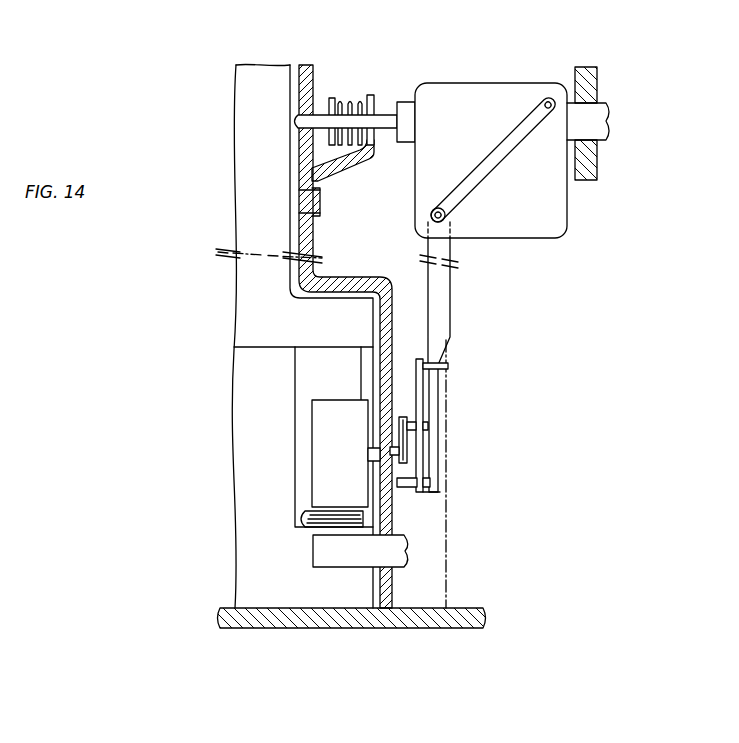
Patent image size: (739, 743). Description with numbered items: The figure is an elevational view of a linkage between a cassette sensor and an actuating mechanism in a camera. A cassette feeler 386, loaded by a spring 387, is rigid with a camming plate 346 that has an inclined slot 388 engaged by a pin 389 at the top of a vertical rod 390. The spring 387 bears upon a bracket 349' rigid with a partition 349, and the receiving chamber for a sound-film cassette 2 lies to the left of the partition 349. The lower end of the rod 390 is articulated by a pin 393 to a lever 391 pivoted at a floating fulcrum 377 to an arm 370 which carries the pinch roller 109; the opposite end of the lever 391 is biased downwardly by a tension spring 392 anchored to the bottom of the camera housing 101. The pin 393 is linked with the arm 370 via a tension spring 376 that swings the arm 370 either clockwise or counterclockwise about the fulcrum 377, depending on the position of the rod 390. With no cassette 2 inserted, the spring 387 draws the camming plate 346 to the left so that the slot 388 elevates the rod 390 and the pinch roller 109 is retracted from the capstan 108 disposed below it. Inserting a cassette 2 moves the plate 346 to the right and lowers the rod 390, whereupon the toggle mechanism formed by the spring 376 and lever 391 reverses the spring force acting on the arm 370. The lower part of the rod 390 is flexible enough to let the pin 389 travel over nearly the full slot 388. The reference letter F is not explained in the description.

The sound-film cassette 2 is at (270, 311).
The camera housing 101 is at (300, 620).
The capstan 108 is at (318, 550).
The pinch roller 109 is at (322, 438).
The friction pad F is at (302, 516).
The camming plate 346 is at (468, 90).
The partition 349 is at (345, 336).
The bracket 349' is at (354, 164).
The arm 370 is at (403, 417).
The tension spring 376 is at (404, 467).
The floating fulcrum 377 is at (432, 425).
The cassette feeler 386 is at (292, 120).
The spring 387 is at (348, 100).
The inclined slot 388 is at (540, 103).
The pin 389 is at (450, 216).
The vertical rod 390 is at (440, 290).
The lever 391 is at (418, 442).
The tension spring 392 is at (447, 533).
The pin 393 is at (428, 492).